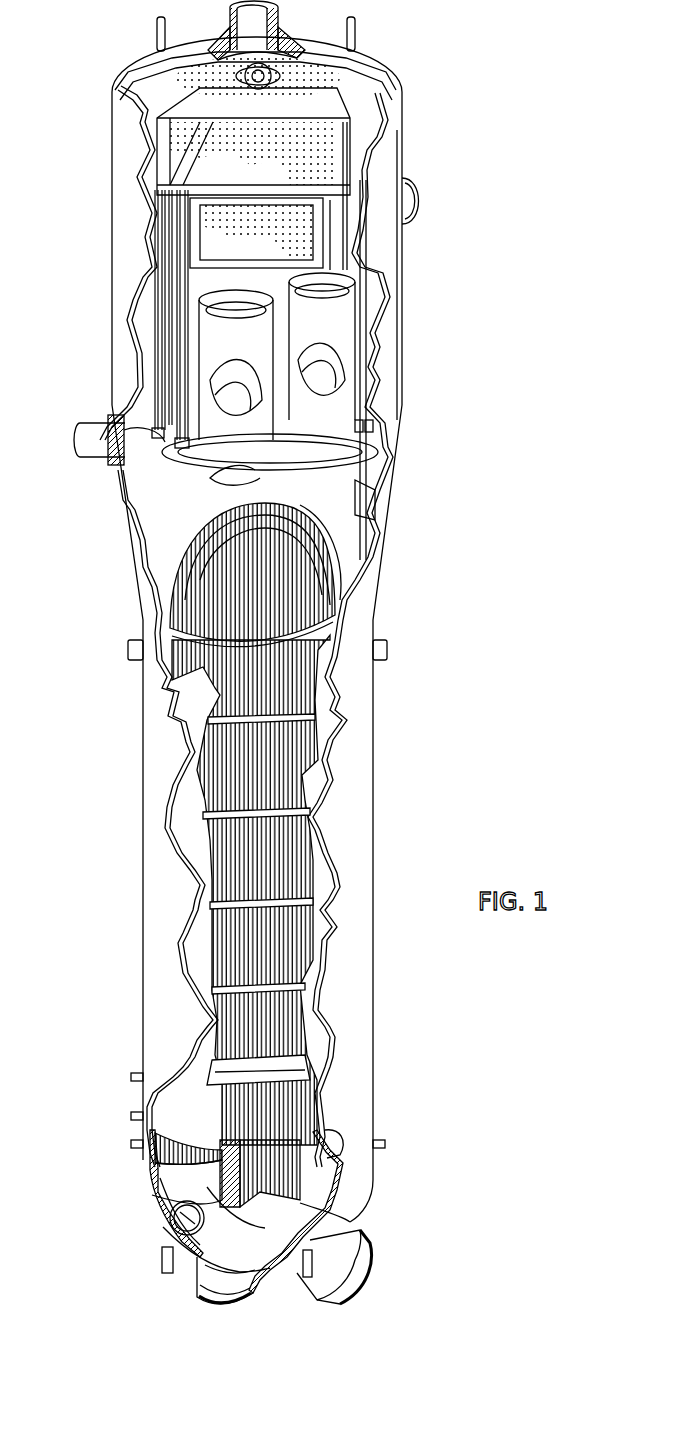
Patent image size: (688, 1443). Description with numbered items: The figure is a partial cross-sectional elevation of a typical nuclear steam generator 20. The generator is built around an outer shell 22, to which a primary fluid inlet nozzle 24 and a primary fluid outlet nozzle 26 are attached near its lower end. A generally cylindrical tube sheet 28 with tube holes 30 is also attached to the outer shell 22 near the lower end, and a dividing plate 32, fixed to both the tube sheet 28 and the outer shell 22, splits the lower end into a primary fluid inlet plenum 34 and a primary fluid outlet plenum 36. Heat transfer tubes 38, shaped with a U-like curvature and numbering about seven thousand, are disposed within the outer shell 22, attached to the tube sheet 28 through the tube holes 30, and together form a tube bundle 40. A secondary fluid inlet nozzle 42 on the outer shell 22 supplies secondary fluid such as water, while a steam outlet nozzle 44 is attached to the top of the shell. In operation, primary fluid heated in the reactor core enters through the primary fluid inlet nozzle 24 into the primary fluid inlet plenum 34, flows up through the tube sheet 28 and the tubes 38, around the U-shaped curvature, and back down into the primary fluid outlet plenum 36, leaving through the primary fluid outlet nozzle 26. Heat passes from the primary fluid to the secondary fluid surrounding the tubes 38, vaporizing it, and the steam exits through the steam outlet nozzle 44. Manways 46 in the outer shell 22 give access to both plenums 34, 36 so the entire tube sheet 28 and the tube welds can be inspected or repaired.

The nuclear steam generator 20 is at (432, 397).
The outer shell 22 is at (120, 232).
The primary fluid inlet nozzle 24 is at (348, 1284).
The primary fluid outlet nozzle 26 is at (213, 1288).
The tube sheet 28 is at (165, 1165).
The tube holes 30 is at (300, 1188).
The dividing plate 32 is at (267, 1240).
The primary fluid inlet plenum 34 is at (320, 1210).
The primary fluid outlet plenum 36 is at (165, 1198).
The tubes 38 is at (280, 830).
The tube bundle 40 is at (283, 690).
The secondary fluid inlet nozzle 42 is at (106, 462).
The steam outlet nozzle 44 is at (290, 42).
The manways 46 is at (180, 1222).